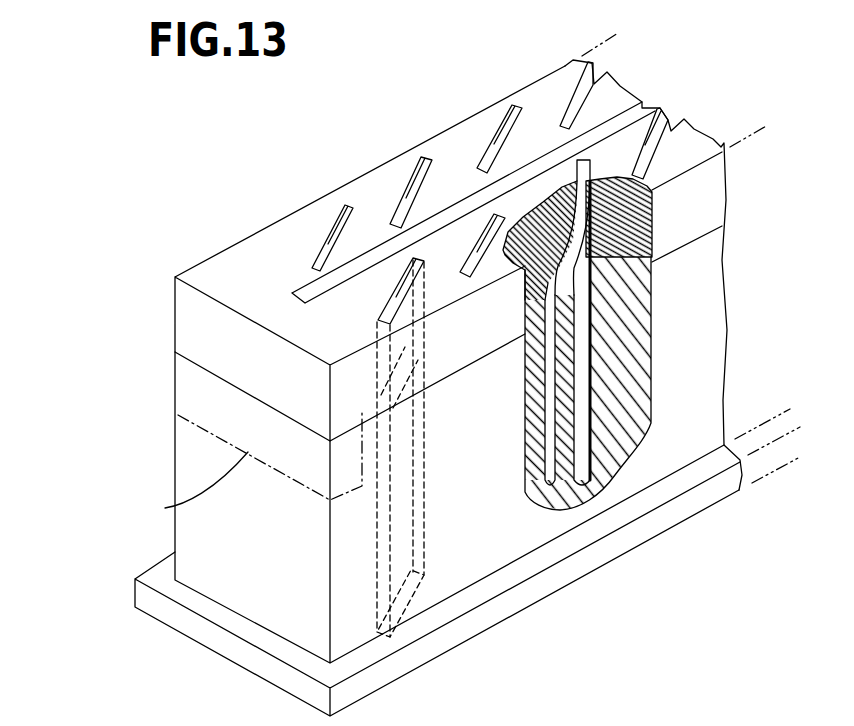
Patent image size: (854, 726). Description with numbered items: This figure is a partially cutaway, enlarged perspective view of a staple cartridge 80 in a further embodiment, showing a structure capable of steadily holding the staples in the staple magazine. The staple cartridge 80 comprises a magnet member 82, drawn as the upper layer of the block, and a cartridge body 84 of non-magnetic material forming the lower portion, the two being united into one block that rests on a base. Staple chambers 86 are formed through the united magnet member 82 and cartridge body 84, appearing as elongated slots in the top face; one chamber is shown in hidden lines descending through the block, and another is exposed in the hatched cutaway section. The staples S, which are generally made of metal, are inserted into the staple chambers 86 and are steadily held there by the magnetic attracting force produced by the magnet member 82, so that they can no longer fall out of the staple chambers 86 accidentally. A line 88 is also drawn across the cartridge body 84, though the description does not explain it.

The staple cartridge 80 is at (87, 290).
The magnet member 82 is at (213, 323).
The cartridge body 84 is at (205, 476).
The staple chambers 86 is at (399, 294).
The cutting line 88 is at (165, 508).
The staples S is at (417, 455).